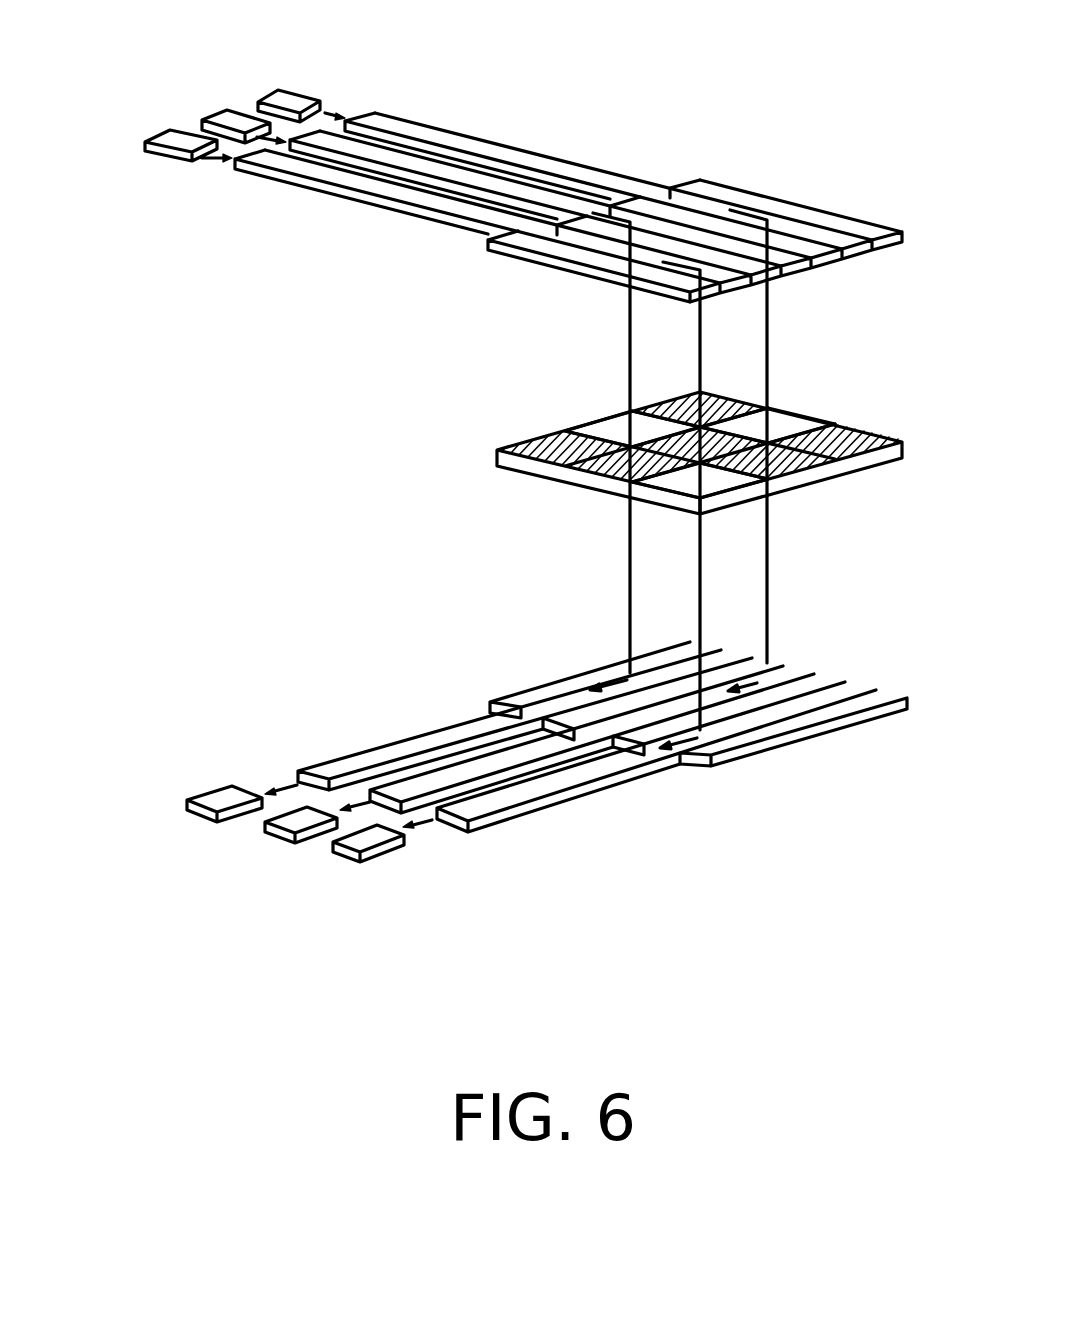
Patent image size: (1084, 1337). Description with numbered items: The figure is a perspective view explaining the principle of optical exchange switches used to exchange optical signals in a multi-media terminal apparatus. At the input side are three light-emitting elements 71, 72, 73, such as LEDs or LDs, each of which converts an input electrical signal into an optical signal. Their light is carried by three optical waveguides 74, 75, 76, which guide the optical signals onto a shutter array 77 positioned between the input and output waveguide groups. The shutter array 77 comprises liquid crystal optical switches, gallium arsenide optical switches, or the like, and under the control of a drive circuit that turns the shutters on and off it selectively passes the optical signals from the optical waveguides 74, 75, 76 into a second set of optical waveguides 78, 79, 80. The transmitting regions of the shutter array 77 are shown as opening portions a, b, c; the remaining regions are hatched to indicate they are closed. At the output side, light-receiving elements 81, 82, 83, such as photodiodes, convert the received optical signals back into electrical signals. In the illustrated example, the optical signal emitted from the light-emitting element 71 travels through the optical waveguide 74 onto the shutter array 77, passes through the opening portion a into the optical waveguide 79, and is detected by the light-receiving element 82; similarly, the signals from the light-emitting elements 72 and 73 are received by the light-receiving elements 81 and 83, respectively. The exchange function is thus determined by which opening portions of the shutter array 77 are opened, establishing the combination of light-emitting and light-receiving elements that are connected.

The light-emitting element 71 is at (284, 92).
The light-emitting element 72 is at (228, 112).
The light-emitting element 73 is at (172, 132).
The optical waveguide 74 is at (430, 120).
The optical waveguide 75 is at (500, 190).
The optical waveguide 76 is at (515, 221).
The shutter array 77 is at (875, 460).
The optical waveguide 78 is at (355, 762).
The optical waveguide 79 is at (475, 772).
The optical waveguide 80 is at (605, 768).
The light-receiving element 81 is at (187, 810).
The light-receiving element 82 is at (283, 834).
The light-receiving element 83 is at (358, 854).
The opening portion a is at (800, 425).
The opening portion b is at (720, 488).
The opening portion c is at (605, 425).